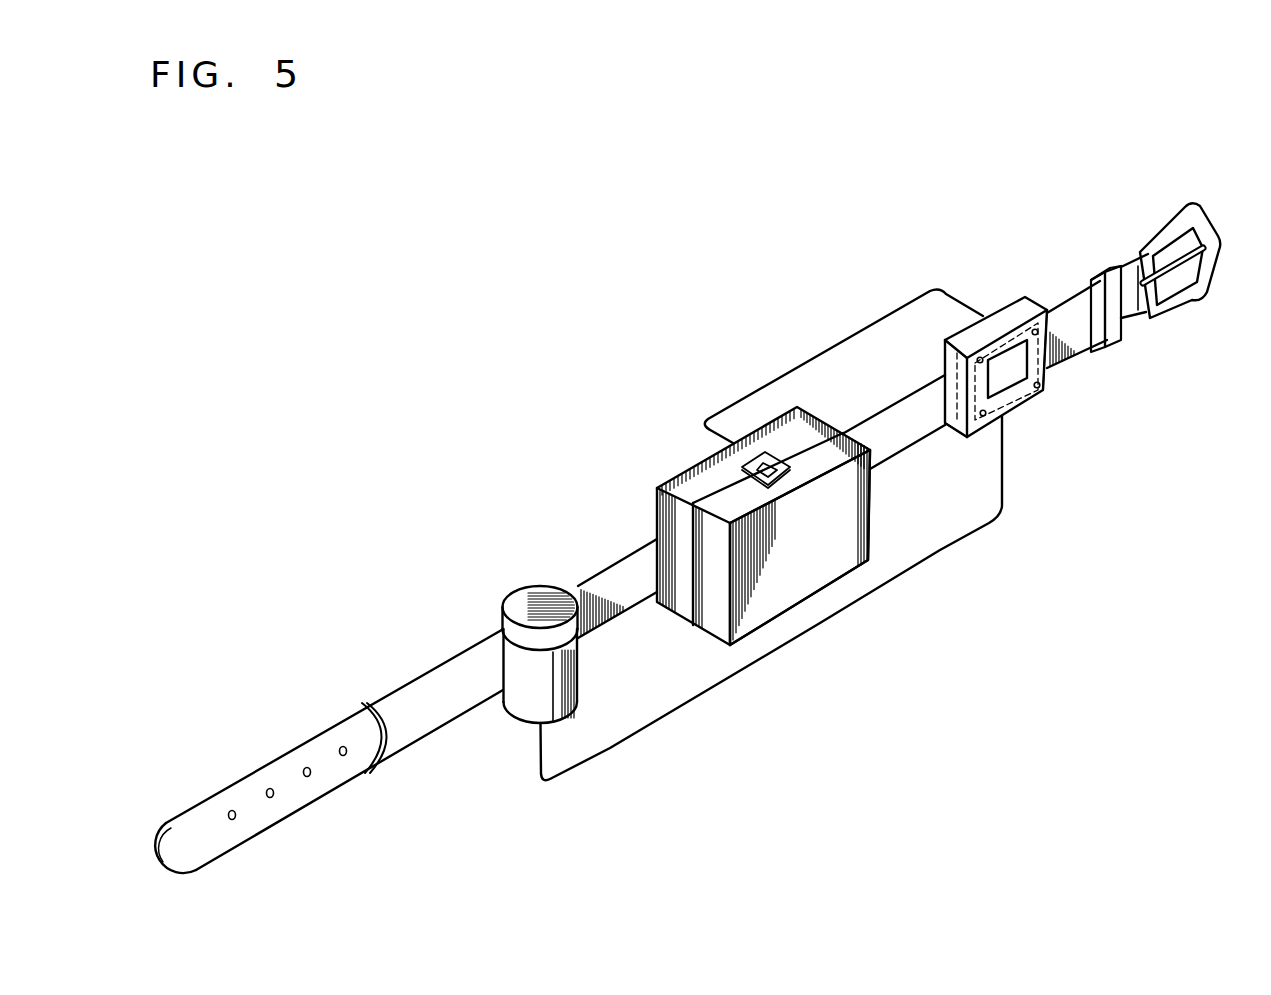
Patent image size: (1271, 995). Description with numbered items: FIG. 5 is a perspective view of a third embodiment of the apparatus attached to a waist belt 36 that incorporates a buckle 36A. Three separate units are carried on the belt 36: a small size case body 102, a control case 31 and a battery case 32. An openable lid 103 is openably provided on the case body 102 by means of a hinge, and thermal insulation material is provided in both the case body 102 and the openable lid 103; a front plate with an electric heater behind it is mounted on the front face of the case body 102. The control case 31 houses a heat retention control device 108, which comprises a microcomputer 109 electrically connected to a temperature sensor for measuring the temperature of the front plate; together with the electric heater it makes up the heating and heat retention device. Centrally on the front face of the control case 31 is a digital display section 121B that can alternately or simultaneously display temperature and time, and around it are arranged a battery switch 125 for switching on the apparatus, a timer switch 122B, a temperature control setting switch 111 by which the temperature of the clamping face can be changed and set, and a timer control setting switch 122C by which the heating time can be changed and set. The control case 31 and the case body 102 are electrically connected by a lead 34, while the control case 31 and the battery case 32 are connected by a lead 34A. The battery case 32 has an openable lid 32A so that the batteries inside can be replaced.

The belt 36 is at (405, 706).
The buckle 36A is at (1183, 204).
The battery case 32 is at (517, 702).
The openable lid 32A is at (528, 600).
The lead 34 is at (810, 353).
The lead 34A is at (710, 692).
The case body 102 is at (703, 470).
The openable lid 103 is at (812, 558).
The heat retention control device 108 is at (1028, 349).
The microcomputer 109 is at (985, 327).
The battery switch 125 is at (957, 343).
The digital display section 121B is at (1028, 366).
The timer switch 122B is at (1040, 314).
The timer control setting switch 122C is at (1050, 402).
The temperature control setting switch 111 is at (983, 418).
The control case 31 is at (1045, 394).